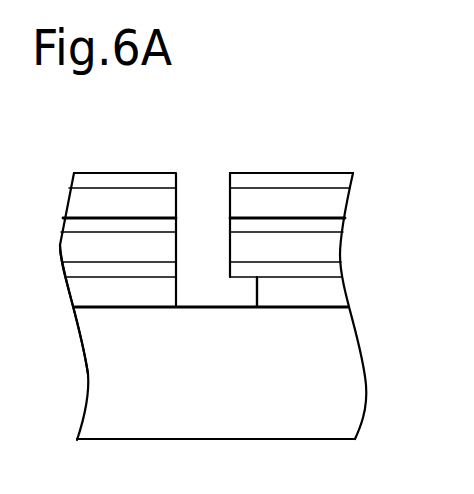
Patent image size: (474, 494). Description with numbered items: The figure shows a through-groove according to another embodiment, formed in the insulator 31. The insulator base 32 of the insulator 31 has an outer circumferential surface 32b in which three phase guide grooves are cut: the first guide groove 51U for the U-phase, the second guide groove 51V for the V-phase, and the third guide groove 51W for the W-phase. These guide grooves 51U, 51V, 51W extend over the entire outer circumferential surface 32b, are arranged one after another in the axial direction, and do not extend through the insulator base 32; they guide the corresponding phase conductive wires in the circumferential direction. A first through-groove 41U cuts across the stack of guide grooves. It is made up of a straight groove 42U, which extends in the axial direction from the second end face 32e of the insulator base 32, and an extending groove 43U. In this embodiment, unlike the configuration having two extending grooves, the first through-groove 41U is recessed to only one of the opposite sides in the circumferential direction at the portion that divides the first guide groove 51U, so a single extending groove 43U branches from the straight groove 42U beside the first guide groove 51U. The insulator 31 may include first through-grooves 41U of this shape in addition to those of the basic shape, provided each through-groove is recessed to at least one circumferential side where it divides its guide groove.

The insulator 31 is at (362, 420).
The insulator base 32 is at (78, 418).
The outer circumferential surface 32b is at (90, 372).
The second end face 32e is at (354, 173).
The first through-groove 41U is at (177, 177).
The straight groove 42U is at (203, 236).
The extending groove 43U is at (243, 290).
The first guide groove 51U is at (301, 304).
The second guide groove 51V is at (282, 231).
The third guide groove 51W is at (247, 187).